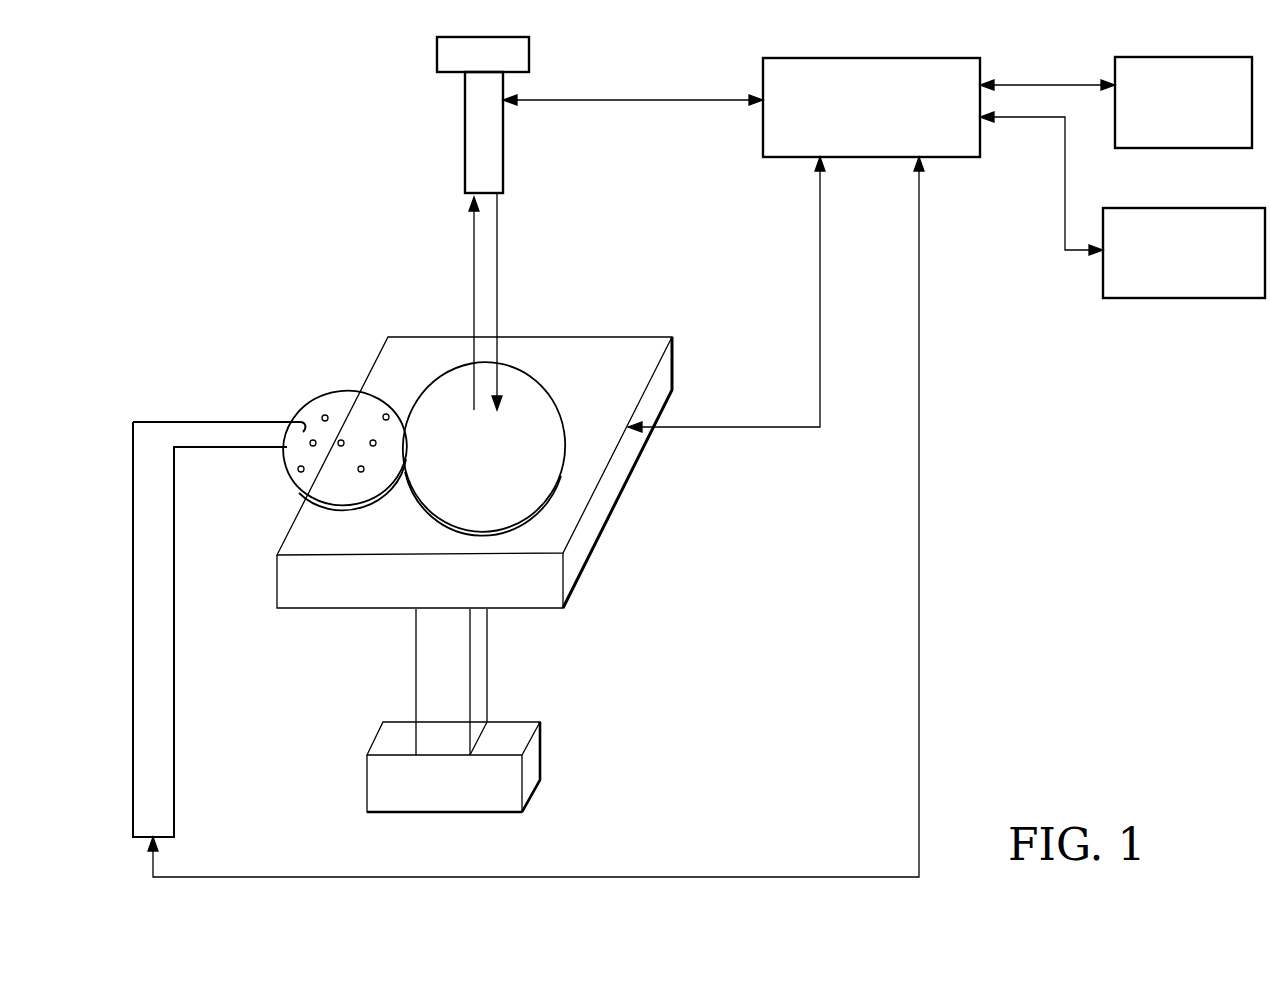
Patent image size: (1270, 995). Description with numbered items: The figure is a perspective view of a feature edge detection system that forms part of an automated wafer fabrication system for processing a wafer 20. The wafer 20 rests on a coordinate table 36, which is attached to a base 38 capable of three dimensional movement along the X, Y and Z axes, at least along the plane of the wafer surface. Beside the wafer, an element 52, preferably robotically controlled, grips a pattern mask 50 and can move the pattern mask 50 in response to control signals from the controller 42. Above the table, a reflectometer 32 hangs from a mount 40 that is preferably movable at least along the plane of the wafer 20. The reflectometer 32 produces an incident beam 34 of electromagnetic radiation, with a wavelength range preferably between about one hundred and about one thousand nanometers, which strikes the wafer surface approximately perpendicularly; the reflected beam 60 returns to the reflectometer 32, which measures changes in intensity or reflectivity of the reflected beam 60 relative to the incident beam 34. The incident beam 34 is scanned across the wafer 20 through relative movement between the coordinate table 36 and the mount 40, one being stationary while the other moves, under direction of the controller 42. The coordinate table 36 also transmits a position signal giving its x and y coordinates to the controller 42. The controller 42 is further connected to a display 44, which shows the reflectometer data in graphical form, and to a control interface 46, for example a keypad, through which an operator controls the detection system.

The wafer 20 is at (548, 405).
The reflectometer 32 is at (465, 128).
The incident beam 34 is at (497, 252).
The coordinate table 36 is at (277, 584).
The base 38 is at (470, 672).
The mount 40 is at (437, 52).
The controller 42 is at (840, 58).
The display 44 is at (1190, 57).
The control interface 46 is at (1237, 208).
The pattern mask 50 is at (352, 391).
The element 52 is at (192, 422).
The reflected beam 60 is at (474, 270).